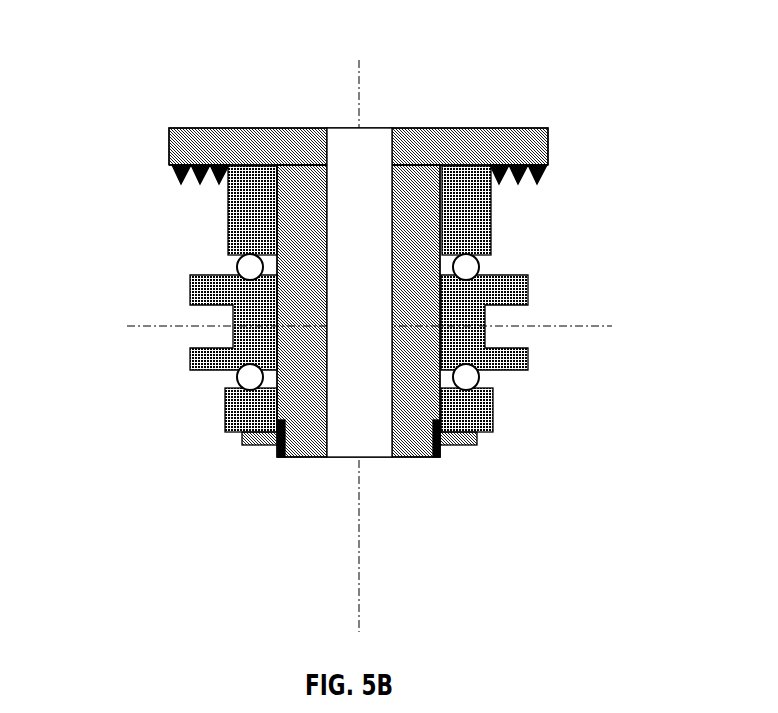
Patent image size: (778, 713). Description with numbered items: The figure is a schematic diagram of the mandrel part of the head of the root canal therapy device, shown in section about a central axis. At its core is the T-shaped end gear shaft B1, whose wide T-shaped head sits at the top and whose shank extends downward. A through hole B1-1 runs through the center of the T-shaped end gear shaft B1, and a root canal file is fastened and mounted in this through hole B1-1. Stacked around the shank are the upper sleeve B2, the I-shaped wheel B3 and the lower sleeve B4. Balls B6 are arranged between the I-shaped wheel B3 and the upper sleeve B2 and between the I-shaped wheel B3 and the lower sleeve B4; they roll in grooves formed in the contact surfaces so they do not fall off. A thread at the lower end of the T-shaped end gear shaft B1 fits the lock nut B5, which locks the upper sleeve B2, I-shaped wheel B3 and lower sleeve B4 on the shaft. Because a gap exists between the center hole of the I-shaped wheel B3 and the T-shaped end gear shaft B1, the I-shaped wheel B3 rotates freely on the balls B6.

The T-shaped end gear shaft B1 is at (307, 196).
The through hole B1-1 is at (373, 200).
The upper sleeve B2 is at (258, 223).
The I-shaped wheel B3 is at (253, 327).
The lower sleeve B4 is at (256, 412).
The lock nut B5 is at (462, 442).
The balls B6 is at (466, 267).